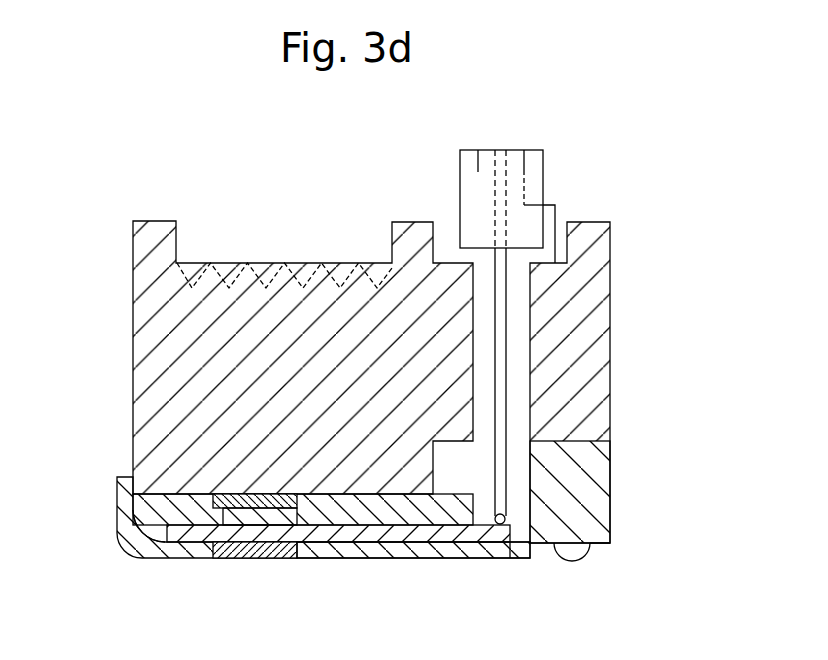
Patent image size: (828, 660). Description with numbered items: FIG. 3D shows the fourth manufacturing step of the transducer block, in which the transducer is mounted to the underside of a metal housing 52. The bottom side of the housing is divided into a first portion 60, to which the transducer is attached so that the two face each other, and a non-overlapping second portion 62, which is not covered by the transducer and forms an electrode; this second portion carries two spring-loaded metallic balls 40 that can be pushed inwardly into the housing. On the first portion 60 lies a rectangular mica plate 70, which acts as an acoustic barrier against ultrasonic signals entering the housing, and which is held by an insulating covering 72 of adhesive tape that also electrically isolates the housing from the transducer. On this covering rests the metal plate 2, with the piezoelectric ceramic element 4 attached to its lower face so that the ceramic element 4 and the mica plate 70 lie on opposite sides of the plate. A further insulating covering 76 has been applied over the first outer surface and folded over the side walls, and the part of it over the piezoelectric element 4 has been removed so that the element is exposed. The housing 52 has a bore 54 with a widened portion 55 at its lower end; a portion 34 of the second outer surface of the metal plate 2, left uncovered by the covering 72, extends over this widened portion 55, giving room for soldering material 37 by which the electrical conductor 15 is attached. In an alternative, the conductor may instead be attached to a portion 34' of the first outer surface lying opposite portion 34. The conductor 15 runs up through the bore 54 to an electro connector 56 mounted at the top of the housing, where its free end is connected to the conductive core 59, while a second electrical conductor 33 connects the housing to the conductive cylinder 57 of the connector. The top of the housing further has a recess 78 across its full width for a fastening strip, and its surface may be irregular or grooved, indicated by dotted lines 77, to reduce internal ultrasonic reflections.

The metal plate 2 is at (336, 559).
The piezoelectric ceramic element 4 is at (250, 558).
The electrical conductor 15 is at (510, 360).
The second electrical conductor 33 is at (556, 218).
The portion of the second outer surface 34 is at (417, 506).
The portion of the first outer surface 34' is at (505, 590).
The soldering material 37 is at (505, 520).
The metallic balls 40 is at (573, 561).
The housing 52 is at (611, 327).
The bore 54 is at (528, 308).
The widened portion 55 is at (520, 453).
The electro connector 56 is at (546, 170).
The electrically conductive cylinder 57 is at (477, 163).
The electrically conductive core 59 is at (495, 184).
The first portion of the bottom side of the housing 60 is at (160, 493).
The second portion of the bottom side of the housing 62 is at (603, 544).
The mica plate 70 is at (224, 512).
The insulating covering 72 is at (143, 517).
The insulating covering 76 is at (117, 500).
The grooved surface 77 is at (183, 278).
The recess 78 is at (231, 263).